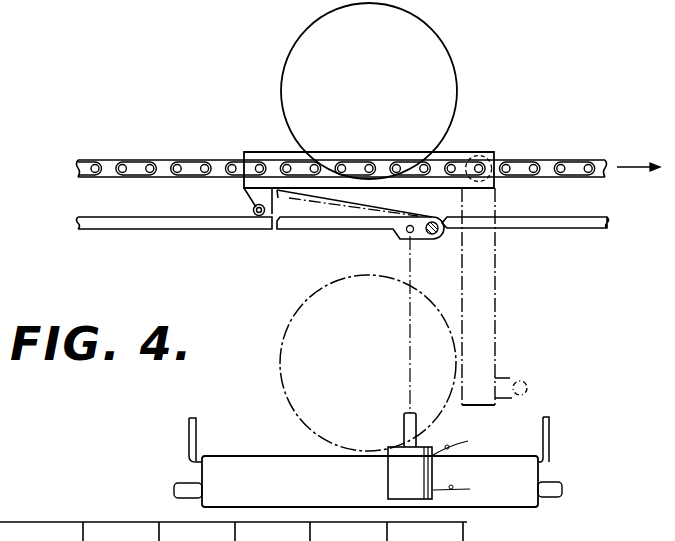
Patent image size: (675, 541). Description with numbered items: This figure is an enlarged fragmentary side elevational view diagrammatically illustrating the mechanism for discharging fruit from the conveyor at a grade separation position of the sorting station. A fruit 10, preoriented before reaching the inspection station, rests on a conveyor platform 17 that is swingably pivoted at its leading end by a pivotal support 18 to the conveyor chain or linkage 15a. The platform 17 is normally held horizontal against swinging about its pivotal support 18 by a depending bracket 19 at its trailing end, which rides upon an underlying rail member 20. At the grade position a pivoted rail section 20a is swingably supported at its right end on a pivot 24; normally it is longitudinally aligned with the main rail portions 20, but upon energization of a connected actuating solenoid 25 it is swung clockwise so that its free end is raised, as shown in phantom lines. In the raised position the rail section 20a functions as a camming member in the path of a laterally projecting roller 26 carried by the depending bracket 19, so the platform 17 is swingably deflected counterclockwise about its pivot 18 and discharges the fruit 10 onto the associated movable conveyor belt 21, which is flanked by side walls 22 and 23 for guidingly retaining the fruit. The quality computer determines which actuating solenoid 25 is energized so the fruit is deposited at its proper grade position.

The fruit 10 is at (432, 53).
The chain or linkage 15a is at (110, 160).
The conveyor platform 17 is at (250, 150).
The pivotal support 18 is at (480, 162).
The depending bracket 19 is at (244, 190).
The rail member 20 is at (140, 230).
The pivoted rail section 20a is at (296, 202).
The conveyor belt 21 is at (495, 498).
The side wall 22 is at (189, 441).
The side wall 23 is at (552, 418).
The pivot 24 is at (432, 236).
The actuating solenoid 25 is at (396, 481).
The roller 26 is at (255, 216).